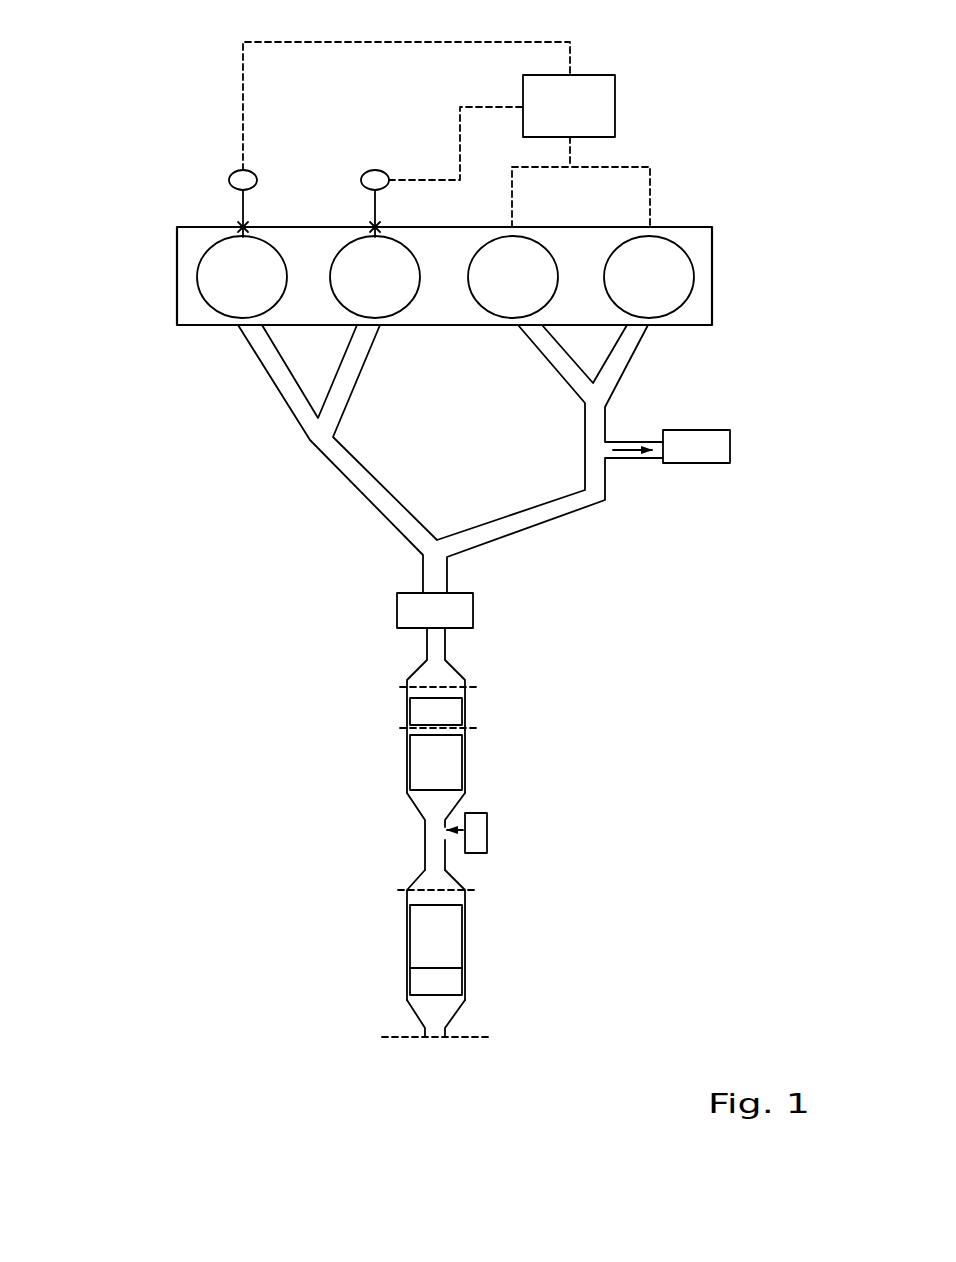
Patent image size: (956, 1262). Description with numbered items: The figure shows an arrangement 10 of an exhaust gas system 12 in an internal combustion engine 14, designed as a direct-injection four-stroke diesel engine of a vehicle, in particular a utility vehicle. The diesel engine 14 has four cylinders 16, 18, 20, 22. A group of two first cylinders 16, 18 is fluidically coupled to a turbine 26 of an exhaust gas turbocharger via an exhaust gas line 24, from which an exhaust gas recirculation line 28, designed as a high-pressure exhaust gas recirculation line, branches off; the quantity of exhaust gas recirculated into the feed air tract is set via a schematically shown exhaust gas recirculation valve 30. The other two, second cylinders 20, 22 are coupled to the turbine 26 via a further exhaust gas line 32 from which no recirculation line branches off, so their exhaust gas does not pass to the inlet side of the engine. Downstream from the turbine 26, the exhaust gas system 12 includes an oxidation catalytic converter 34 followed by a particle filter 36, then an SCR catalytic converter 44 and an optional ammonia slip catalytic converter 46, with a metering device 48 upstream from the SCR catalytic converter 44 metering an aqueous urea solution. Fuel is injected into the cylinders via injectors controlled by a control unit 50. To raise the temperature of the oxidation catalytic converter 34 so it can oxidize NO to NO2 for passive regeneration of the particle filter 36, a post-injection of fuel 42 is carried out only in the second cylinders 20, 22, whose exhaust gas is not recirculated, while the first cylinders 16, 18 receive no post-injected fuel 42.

The arrangement 10 is at (150, 90).
The exhaust gas system 12 is at (168, 364).
The internal combustion engine 14 is at (693, 246).
The first cylinder 16 is at (677, 297).
The first cylinder 18 is at (500, 248).
The second cylinder 20 is at (400, 303).
The second cylinder 22 is at (215, 253).
The exhaust gas line 24 is at (611, 413).
The turbine 26 is at (463, 608).
The exhaust gas recirculation line 28 is at (632, 459).
The exhaust gas recirculation valve 30 is at (712, 457).
The further exhaust gas line 32 is at (364, 468).
The oxidation catalytic converter 34 is at (457, 715).
The particle filter 36 is at (457, 763).
The post-injected fuel 42 is at (237, 168).
The SCR catalytic converter 44 is at (453, 922).
The ammonia slip catalytic converter 46 is at (455, 977).
The metering device 48 is at (478, 832).
The control unit 50 is at (605, 90).